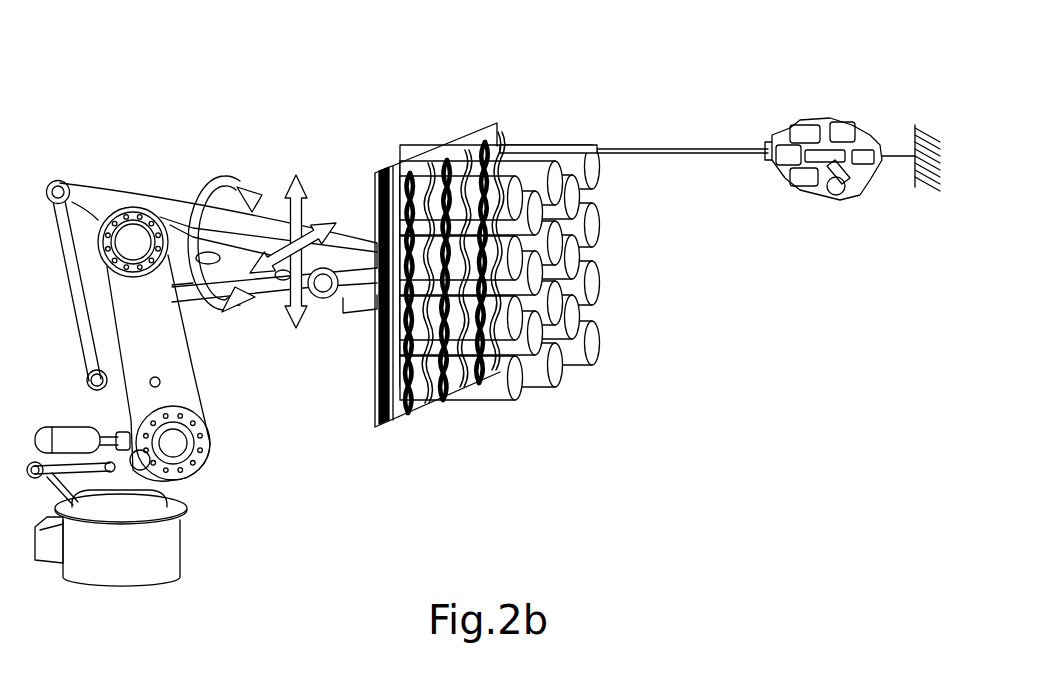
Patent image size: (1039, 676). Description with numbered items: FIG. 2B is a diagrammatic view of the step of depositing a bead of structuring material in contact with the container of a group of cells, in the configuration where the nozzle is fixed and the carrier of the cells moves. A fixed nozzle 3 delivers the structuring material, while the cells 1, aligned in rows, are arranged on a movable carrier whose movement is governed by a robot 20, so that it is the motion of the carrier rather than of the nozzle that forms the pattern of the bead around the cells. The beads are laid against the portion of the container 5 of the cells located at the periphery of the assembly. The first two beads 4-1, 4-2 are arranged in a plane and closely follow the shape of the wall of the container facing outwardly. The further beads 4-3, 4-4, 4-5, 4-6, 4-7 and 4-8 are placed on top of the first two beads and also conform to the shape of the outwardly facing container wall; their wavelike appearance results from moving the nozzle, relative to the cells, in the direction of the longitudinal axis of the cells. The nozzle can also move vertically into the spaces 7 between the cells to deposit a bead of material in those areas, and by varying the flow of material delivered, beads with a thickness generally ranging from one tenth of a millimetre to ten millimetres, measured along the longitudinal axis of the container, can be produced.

The robot 20 is at (145, 192).
The nozzle 3 is at (702, 150).
The spaces between the cells 7 is at (582, 293).
The cells 1 is at (597, 346).
The container 5 is at (437, 380).
The first bead 4-1 is at (378, 178).
The second bead 4-2 is at (405, 175).
The bead 4-3 is at (427, 165).
The bead 4-4 is at (445, 160).
The bead 4-5 is at (462, 152).
The bead 4-6 is at (480, 146).
The bead 4-7 is at (495, 132).
The bead 4-8 is at (500, 147).